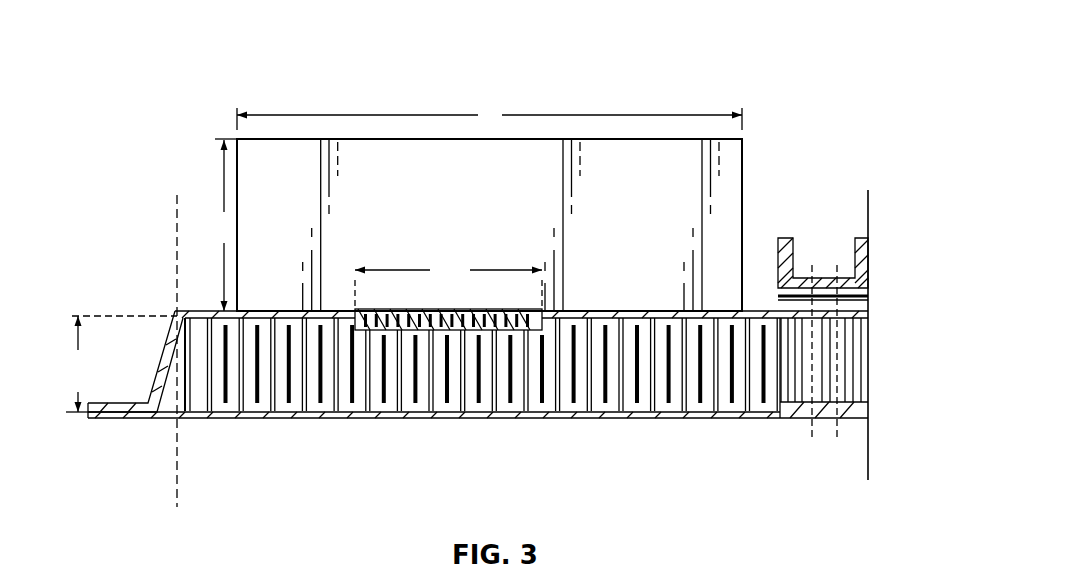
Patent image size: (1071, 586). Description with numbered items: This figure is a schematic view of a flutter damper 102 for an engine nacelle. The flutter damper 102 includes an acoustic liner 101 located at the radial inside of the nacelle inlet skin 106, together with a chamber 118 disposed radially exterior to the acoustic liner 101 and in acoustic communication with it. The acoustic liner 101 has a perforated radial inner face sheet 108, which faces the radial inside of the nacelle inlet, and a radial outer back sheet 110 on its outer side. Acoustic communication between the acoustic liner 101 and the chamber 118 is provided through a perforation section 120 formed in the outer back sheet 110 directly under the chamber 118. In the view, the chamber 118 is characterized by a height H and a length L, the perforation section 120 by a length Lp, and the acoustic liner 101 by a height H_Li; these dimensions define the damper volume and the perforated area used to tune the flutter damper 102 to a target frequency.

The flutter damper 102 is at (708, 69).
The chamber 118 is at (748, 160).
The radial outer back sheet 110 is at (746, 311).
The nacelle inlet skin 106 is at (157, 420).
The acoustic liner 101 is at (298, 402).
The perforation section 120 is at (393, 330).
The perforated radial inner face sheet 108 is at (657, 417).